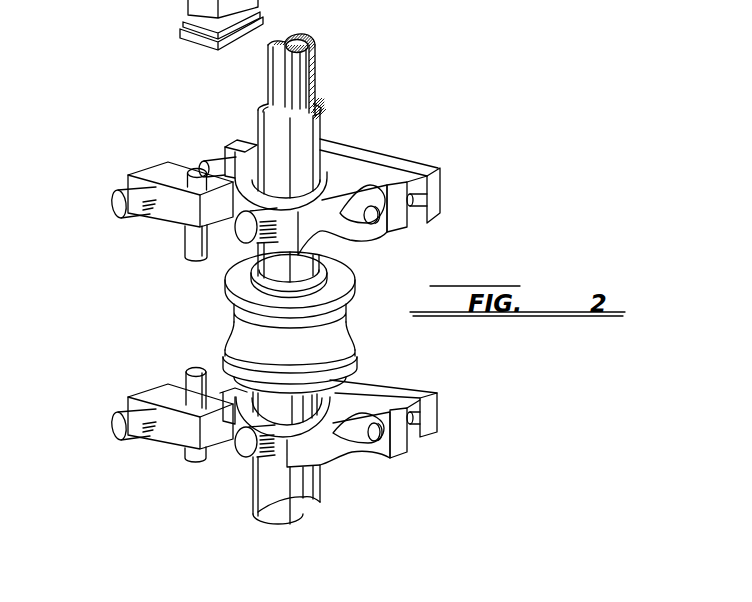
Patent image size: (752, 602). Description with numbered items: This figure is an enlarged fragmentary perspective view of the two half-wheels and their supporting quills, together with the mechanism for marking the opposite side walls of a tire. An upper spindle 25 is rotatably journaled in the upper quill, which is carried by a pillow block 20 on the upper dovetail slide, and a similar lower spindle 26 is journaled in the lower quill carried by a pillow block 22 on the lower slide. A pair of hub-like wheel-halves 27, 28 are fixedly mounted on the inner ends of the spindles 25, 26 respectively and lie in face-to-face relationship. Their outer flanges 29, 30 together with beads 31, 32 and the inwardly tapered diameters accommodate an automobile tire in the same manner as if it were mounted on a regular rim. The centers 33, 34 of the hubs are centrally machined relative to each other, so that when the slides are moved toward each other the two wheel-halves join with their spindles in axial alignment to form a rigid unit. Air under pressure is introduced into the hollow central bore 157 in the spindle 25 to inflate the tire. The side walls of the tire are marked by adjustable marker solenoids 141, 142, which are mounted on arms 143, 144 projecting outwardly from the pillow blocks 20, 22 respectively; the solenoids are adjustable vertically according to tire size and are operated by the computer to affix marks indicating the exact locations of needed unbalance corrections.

The hollow central bore 157 is at (302, 36).
The spindle 25 is at (306, 77).
The pillow block 20 is at (340, 173).
The arm 143 is at (118, 193).
The marker solenoid 141 is at (190, 240).
The outer flange 29 is at (226, 277).
The wheel-half 27 is at (357, 274).
The bead 31 is at (352, 307).
The center of hub 33 is at (340, 318).
The center of hub 34 is at (339, 340).
The wheel-half 28 is at (365, 366).
The bead 32 is at (230, 350).
The outer flange 30 is at (226, 362).
The marker solenoid 142 is at (184, 376).
The arm 144 is at (133, 443).
The pillow block 22 is at (327, 448).
The spindle 26 is at (290, 520).